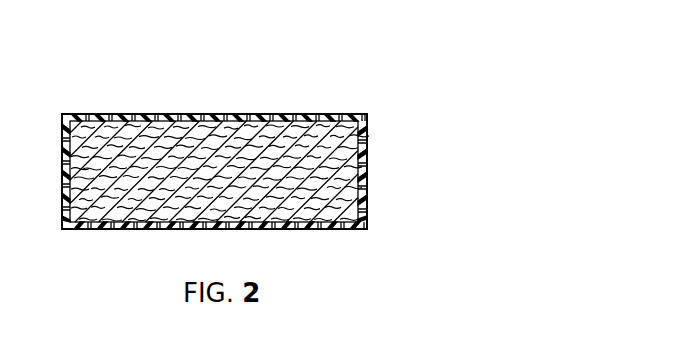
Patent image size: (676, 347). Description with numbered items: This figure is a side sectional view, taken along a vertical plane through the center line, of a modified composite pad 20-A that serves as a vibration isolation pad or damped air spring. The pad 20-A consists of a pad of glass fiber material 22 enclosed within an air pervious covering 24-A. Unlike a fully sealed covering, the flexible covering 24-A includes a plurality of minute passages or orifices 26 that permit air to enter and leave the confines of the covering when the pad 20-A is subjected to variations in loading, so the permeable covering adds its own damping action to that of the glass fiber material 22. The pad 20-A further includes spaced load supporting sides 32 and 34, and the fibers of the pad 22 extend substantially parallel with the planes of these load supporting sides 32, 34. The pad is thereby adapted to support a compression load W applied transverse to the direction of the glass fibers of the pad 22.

The modified composite pad 20-A is at (73, 109).
The pad of glass fiber material 22 is at (285, 207).
The air pervious covering 24-A is at (303, 117).
The minute passages or orifices 26 is at (165, 118).
The load supporting side 32 is at (242, 117).
The load supporting side 34 is at (142, 229).
The compression load W is at (215, 107).